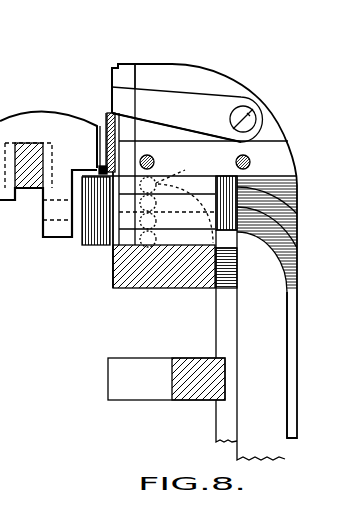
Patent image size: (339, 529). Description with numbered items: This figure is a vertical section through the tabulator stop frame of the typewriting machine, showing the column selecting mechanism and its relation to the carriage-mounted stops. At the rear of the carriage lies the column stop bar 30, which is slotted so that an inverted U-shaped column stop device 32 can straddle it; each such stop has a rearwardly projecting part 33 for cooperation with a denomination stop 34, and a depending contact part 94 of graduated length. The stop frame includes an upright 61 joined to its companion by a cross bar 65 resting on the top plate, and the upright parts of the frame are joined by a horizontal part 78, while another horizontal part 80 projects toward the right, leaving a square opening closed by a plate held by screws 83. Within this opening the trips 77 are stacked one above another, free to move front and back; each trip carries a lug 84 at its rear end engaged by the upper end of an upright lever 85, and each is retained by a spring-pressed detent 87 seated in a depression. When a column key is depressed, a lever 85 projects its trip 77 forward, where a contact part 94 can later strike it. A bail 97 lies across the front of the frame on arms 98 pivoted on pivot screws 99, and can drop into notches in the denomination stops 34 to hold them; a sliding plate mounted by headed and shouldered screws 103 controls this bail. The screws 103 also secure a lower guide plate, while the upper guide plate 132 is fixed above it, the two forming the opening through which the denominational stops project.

The column stop bar 30 is at (19, 143).
The column stop device 32 is at (41, 119).
The rearwardly projecting part 33 is at (116, 138).
The denomination stop 34 is at (106, 117).
The upright 61 is at (217, 308).
The cross bar 65 is at (182, 360).
The trip 77 is at (93, 245).
The horizontal part 78 is at (147, 280).
The horizontal part 80 is at (187, 114).
The screw 83 is at (154, 162).
The lug 84 is at (239, 242).
The upright lever 85 is at (282, 318).
The detent 87 is at (179, 188).
The contact part 94 is at (50, 233).
The bail 97 is at (114, 71).
The arm 98 is at (189, 251).
The pivot screw 99 is at (250, 112).
The screw 103 is at (99, 168).
The guide plate 132 is at (132, 77).